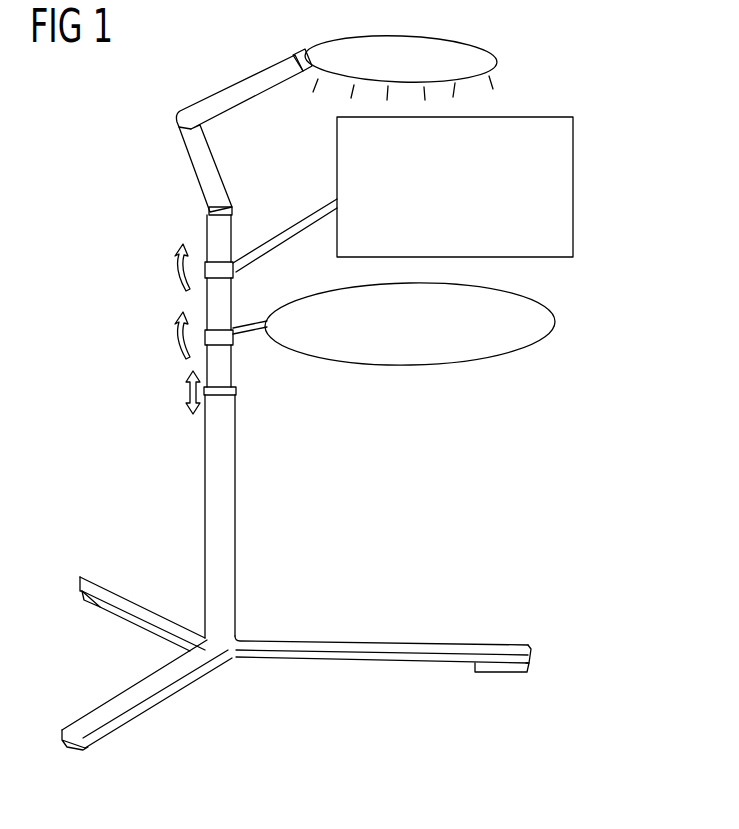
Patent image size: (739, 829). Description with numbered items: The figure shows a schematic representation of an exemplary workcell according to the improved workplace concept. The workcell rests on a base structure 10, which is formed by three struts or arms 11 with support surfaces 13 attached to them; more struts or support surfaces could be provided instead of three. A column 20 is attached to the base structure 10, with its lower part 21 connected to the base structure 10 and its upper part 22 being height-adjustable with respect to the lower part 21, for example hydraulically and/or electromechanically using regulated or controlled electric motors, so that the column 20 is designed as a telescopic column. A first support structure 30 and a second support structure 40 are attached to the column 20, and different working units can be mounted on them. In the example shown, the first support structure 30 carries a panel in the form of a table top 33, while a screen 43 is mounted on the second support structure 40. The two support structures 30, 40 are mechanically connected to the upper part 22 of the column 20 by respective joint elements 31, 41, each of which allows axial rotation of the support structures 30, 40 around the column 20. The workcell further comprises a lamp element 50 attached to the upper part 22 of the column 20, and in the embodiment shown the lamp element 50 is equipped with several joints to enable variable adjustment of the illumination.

The base structure 10 is at (279, 653).
The struts or arms 11 is at (151, 612).
The support surfaces 13 is at (83, 600).
The column 20 is at (249, 422).
The lower part of the column 21 is at (214, 510).
The upper part of the column 22 is at (218, 300).
The first support structure 30 is at (407, 353).
The joint element 31 is at (230, 340).
The table top 33 is at (546, 304).
The second support structure 40 is at (389, 179).
The joint element 41 is at (229, 271).
The screen 43 is at (545, 117).
The lamp element 50 is at (148, 152).